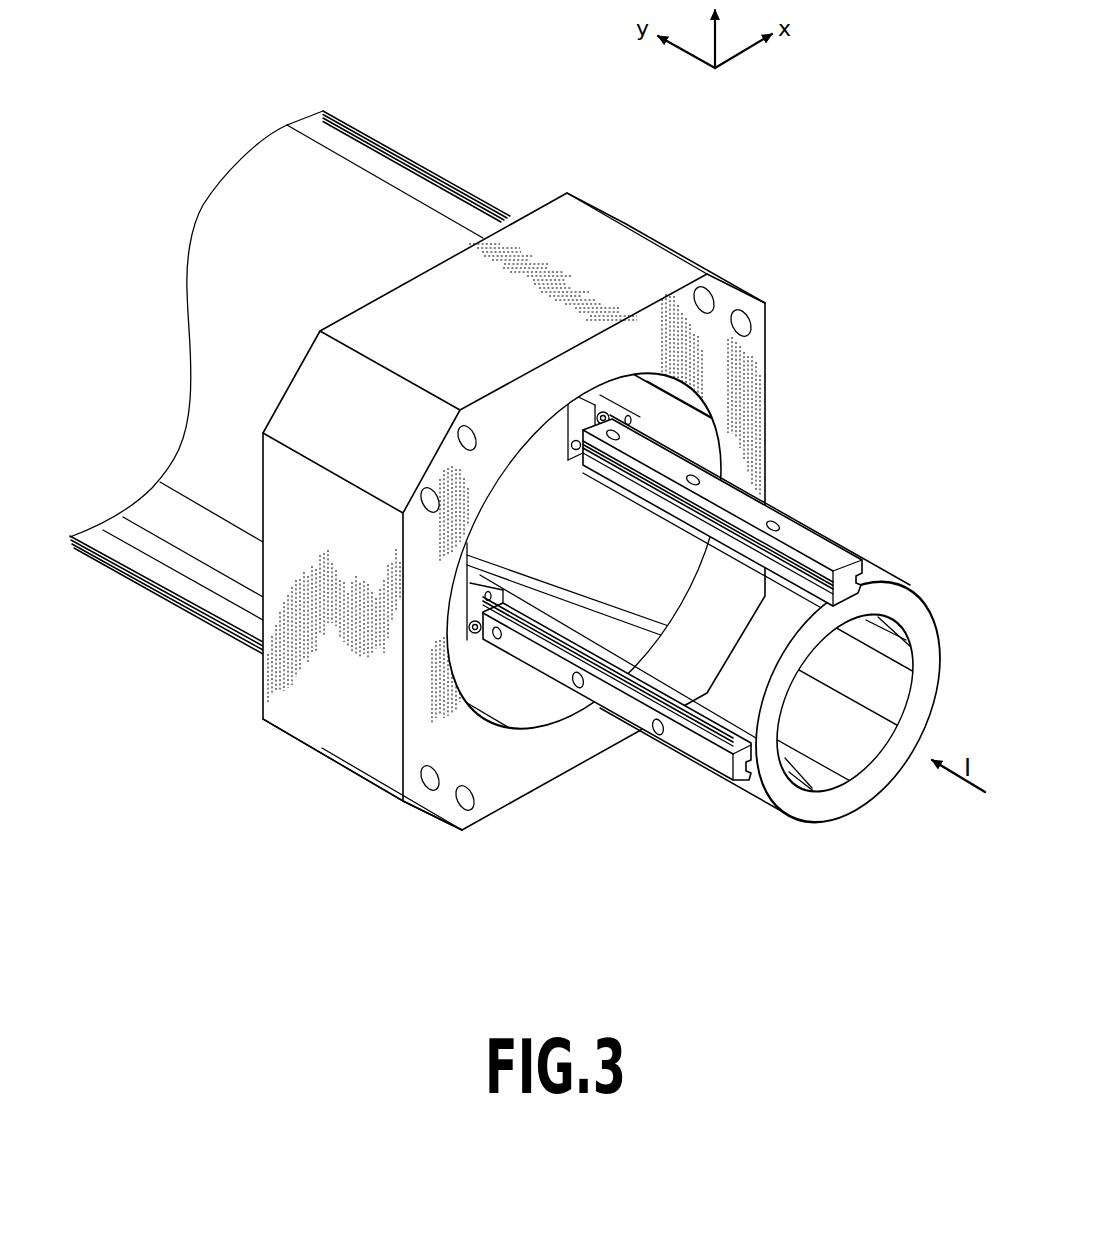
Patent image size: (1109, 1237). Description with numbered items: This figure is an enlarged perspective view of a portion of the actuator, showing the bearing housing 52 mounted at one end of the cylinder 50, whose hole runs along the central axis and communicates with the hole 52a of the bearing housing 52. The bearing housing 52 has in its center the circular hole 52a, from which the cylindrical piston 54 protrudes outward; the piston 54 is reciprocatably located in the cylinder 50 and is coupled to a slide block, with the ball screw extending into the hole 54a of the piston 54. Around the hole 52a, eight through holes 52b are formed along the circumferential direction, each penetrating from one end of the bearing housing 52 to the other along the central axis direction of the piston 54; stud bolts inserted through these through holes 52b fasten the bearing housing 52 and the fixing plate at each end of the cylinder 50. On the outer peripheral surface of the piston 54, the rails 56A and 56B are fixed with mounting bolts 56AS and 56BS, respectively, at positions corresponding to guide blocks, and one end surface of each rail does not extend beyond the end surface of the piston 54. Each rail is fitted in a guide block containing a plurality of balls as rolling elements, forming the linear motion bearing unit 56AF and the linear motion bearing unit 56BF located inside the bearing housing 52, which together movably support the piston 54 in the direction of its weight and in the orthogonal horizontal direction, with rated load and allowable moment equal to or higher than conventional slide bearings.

The cylinder 50 is at (432, 193).
The bearing housing 52 is at (633, 252).
The hole of the bearing housing 52a is at (698, 412).
The through holes of the bearing housing 52b is at (742, 308).
The piston 54 is at (720, 636).
The hole of the piston 54a is at (838, 775).
The rail 56A is at (728, 512).
The mounting bolts 56AS is at (775, 521).
The linear motion bearing unit 56AF is at (582, 403).
The rail 56B is at (617, 726).
The mounting bolts 56BS is at (657, 737).
The linear motion bearing unit 56BF is at (462, 630).